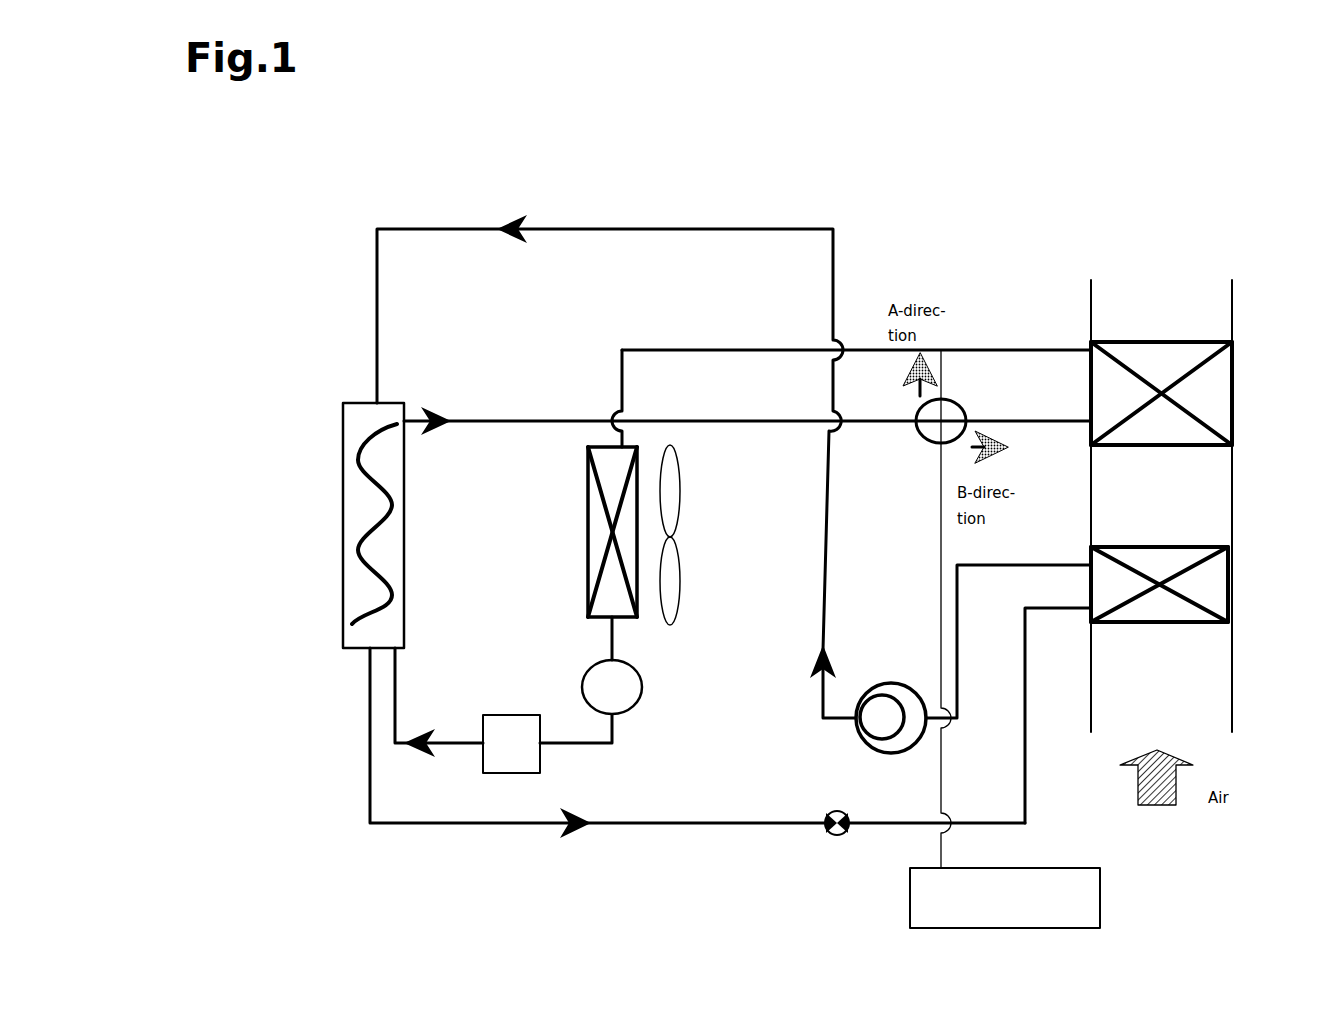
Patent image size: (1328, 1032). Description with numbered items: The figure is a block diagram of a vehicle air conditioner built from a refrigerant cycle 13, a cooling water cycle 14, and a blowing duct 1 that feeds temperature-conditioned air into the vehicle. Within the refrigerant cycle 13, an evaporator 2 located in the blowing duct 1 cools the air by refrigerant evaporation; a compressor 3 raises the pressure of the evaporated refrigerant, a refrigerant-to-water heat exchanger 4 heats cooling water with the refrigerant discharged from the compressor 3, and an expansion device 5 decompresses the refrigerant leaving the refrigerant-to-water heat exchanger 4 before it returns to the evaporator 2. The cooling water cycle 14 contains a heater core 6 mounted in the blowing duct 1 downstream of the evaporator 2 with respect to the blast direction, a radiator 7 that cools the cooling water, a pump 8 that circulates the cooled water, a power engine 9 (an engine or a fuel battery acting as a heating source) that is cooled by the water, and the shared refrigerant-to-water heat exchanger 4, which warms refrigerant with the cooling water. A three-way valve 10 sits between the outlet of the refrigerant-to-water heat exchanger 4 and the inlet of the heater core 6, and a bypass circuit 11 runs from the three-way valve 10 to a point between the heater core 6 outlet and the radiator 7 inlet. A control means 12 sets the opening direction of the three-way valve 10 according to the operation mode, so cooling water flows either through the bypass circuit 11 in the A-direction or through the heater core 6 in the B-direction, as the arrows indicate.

The blowing duct 1 is at (1172, 483).
The evaporator 2 is at (1143, 624).
The compressor 3 is at (865, 752).
The refrigerant-to-water heat exchanger 4 is at (338, 490).
The expansion device 5 is at (846, 837).
The heater core 6 is at (1232, 421).
The radiator 7 is at (588, 555).
The pump 8 is at (612, 687).
The power engine 9 is at (511, 744).
The three-way valve 10 is at (918, 444).
The bypass circuit 11 is at (942, 378).
The control means 12 is at (1005, 898).
The refrigerant cycle 13 is at (1025, 752).
The cooling water cycle 14 is at (875, 350).